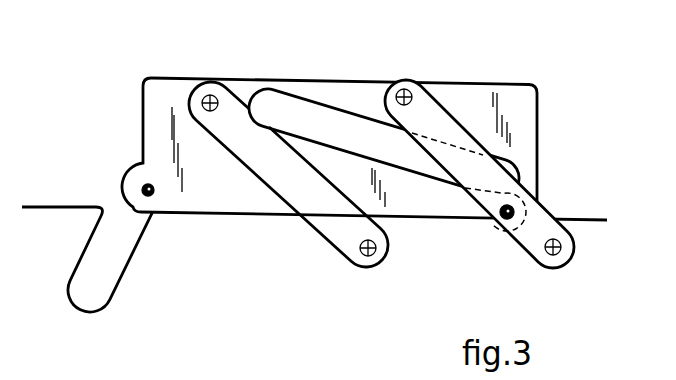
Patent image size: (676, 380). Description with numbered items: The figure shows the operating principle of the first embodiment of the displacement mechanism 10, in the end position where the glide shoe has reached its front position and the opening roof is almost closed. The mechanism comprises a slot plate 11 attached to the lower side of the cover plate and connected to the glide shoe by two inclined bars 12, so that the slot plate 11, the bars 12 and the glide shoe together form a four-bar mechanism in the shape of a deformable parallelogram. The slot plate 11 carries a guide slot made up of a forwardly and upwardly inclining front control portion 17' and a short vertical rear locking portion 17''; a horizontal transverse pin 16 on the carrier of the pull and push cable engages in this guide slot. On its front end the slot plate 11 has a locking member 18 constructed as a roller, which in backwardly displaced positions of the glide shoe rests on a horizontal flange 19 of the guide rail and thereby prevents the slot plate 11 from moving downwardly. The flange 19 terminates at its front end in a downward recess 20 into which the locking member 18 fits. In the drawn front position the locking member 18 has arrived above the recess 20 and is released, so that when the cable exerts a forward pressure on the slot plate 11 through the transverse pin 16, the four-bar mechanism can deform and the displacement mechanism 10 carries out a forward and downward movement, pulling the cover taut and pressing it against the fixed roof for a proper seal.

The displacement mechanism 10 is at (335, 173).
The slot plate 11 is at (154, 90).
The inclined bars 12 is at (445, 130).
The transverse pin 16 is at (483, 233).
The front control portion 17' is at (384, 107).
The rear locking portion 17'' is at (530, 124).
The locking member 18 is at (142, 184).
The horizontal flange 19 is at (213, 213).
The downward recess 20 is at (115, 265).